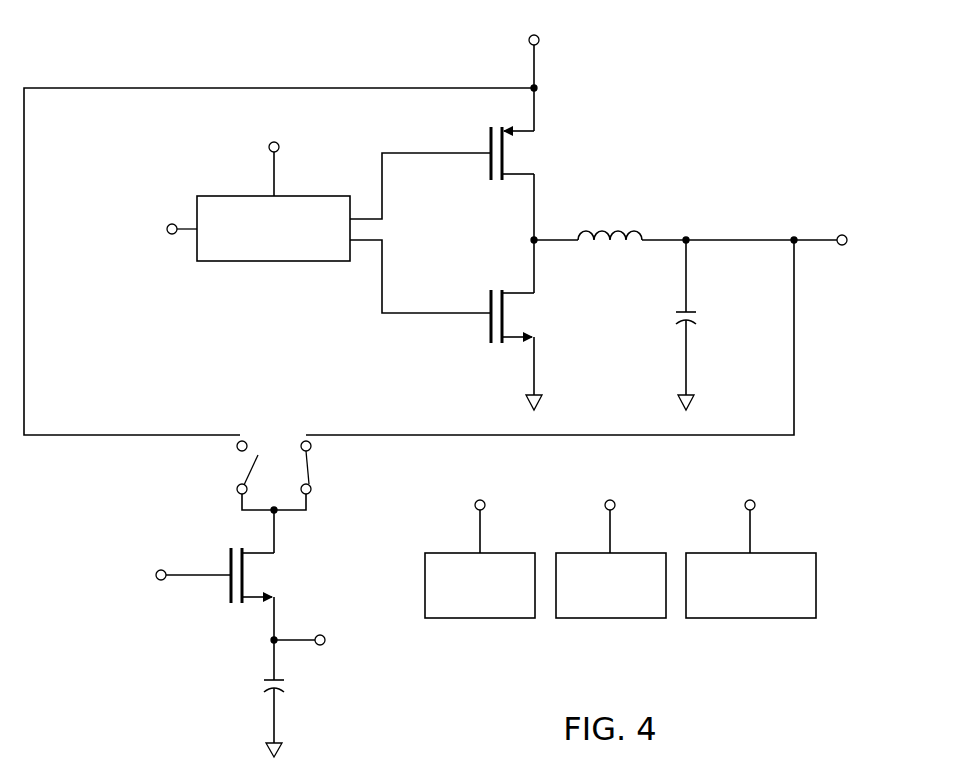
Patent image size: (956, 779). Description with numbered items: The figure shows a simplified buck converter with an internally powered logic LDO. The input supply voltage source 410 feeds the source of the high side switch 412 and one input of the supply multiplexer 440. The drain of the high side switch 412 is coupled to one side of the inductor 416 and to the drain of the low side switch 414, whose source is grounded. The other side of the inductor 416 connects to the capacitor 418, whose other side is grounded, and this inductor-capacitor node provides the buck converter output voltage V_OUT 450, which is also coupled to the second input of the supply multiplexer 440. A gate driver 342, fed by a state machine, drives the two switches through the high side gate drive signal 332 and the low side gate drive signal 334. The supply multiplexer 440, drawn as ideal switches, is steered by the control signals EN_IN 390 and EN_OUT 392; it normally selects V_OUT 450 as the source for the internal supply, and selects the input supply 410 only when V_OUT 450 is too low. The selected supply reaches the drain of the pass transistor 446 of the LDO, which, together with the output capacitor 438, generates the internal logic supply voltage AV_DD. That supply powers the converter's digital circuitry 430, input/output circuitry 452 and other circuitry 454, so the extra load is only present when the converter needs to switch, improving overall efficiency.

The input supply voltage source 410 is at (537, 71).
The high side switch 412 is at (489, 142).
The low side switch 414 is at (489, 305).
The inductor 416 is at (621, 222).
The capacitor 418 is at (700, 313).
The buck converter output voltage V_OUT 450 is at (812, 239).
The high side gate drive signal 332 is at (387, 198).
The low side gate drive signal 334 is at (387, 262).
The gate driver 342 is at (260, 262).
The supply multiplexer 440 is at (273, 441).
The EN_IN control signal 390 is at (237, 490).
The EN_OUT control signal 392 is at (311, 490).
The pass transistor 446 is at (229, 565).
The output capacitor 438 is at (262, 683).
The digital circuitry 430 is at (492, 620).
The input/output circuitry 452 is at (622, 620).
The other circuitry 454 is at (764, 620).